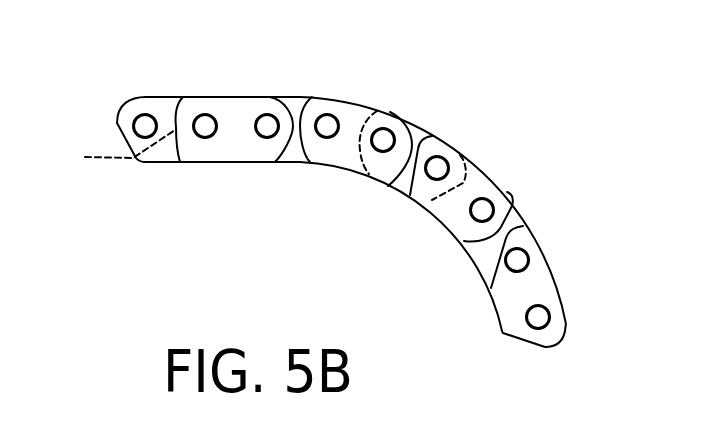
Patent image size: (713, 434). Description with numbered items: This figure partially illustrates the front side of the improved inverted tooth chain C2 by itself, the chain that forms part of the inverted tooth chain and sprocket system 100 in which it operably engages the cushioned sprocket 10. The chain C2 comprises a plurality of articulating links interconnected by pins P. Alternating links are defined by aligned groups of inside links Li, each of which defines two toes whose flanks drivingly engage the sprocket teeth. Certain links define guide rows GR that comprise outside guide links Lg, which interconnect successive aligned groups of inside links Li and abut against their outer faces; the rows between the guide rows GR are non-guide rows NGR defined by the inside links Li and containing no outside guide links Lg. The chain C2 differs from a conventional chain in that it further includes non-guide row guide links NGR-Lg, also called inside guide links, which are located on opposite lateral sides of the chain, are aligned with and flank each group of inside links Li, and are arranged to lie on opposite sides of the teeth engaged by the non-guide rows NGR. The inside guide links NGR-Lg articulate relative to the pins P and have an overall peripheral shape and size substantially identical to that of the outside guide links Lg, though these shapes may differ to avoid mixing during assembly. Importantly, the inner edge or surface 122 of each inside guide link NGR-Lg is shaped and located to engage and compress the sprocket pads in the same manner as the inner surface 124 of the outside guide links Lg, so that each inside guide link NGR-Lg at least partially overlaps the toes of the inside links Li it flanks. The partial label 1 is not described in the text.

The inner edge or surface 122 is at (160, 167).
The inner surface 124 is at (232, 162).
The guide row GR is at (253, 89).
The non-guide row NGR is at (173, 80).
The guide link Lg is at (256, 105).
The non-guide row guide link NGR-Lg is at (421, 140).
The pin P is at (516, 262).
The inside link Li is at (112, 149).
The inverted tooth chain C2 is at (153, 215).
The inverted tooth chain and sprocket system 100 is at (712, 342).
The cushioned sprocket 10 is at (712, 418).
The chain drive 1 is at (709, 253).